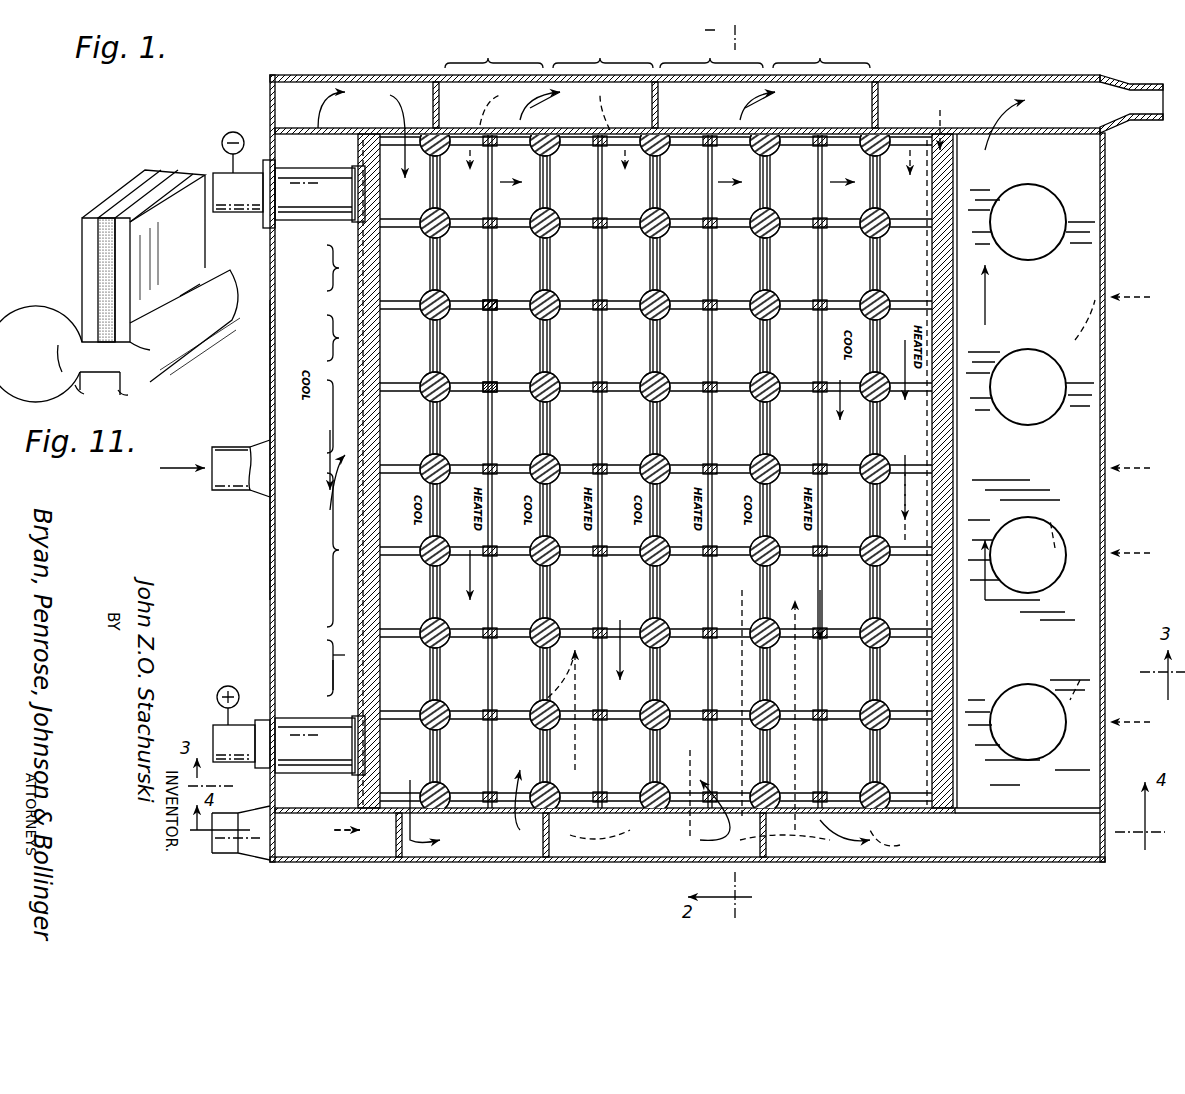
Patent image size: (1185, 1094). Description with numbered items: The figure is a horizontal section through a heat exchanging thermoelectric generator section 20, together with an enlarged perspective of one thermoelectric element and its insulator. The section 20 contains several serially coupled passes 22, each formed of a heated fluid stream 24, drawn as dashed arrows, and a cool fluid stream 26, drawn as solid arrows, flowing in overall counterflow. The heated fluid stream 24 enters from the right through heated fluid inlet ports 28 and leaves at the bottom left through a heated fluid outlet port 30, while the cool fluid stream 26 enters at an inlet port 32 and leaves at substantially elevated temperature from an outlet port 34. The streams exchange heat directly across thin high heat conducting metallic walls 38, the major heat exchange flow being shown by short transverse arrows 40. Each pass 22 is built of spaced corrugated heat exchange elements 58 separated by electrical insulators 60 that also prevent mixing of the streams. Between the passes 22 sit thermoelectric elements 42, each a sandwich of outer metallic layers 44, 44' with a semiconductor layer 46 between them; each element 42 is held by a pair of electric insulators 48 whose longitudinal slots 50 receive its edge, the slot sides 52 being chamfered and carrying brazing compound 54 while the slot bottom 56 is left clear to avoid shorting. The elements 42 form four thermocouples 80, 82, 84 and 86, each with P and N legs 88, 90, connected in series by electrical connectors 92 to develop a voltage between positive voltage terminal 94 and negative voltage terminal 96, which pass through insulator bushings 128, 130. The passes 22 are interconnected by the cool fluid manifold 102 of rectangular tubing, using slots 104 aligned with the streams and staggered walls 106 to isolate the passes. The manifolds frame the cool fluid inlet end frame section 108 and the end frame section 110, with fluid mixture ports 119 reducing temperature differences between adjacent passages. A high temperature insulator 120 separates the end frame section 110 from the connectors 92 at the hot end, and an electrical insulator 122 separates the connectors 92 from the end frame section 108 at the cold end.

In FIG. 1, the heat exchanging thermoelectric generator section 20 is at (318, 72).
In FIG. 1, the heated and cool fluid stream pass 22 is at (488, 58).
In FIG. 1, the heated fluid stream 24 is at (928, 112).
In FIG. 1, the cool fluid stream 26 is at (995, 140).
In FIG. 1, the heated fluid inlet port 28 is at (1105, 220).
In FIG. 1, the heated fluid outlet port 30 is at (212, 850).
In FIG. 1, the cool fluid inlet port 32 is at (212, 482).
In FIG. 1, the cool fluid outlet port 34 is at (1152, 84).
In FIG. 1, the high heat conducting metallic wall 38 is at (494, 197).
In FIG. 1, the transverse heat exchange arrow 40 is at (483, 180).
In FIG. 1, the thermoelectric element 42 is at (441, 255).
In FIG. 11, the thermoelectric element 42 is at (110, 192).
In FIG. 11, the outer metallic layer 44 is at (85, 263).
In FIG. 11, the outer metallic layer 44' is at (158, 258).
In FIG. 11, the semiconductor layer 46 is at (178, 175).
In FIG. 1, the electric insulator 48 is at (550, 250).
In FIG. 11, the electric insulator 48 is at (196, 336).
In FIG. 11, the longitudinal slot 50 is at (103, 385).
In FIG. 11, the slot side 52 is at (76, 386).
In FIG. 11, the brazing compound 54 is at (196, 280).
In FIG. 11, the slot bottom 56 is at (68, 355).
In FIG. 1, the heat exchange element 58 is at (475, 112).
In FIG. 1, the electrical insulator 60 is at (493, 320).
In FIG. 1, the thermocouple 80 is at (316, 268).
In FIG. 1, the thermocouple 82 is at (325, 340).
In FIG. 1, the thermocouple 84 is at (337, 552).
In FIG. 1, the thermocouple 86 is at (333, 660).
In FIG. 1, the thermocouple leg 88 is at (355, 601).
In FIG. 1, the thermocouple leg 90 is at (355, 522).
In FIG. 1, the electrical connector 92 is at (355, 302).
In FIG. 1, the positive voltage terminal 94 is at (215, 725).
In FIG. 1, the negative voltage terminal 96 is at (255, 215).
In FIG. 1, the cool fluid stream manifold 102 is at (405, 78).
In FIG. 1, the manifold slot 104 is at (780, 115).
In FIG. 1, the manifold wall 106 is at (672, 105).
In FIG. 1, the cool fluid inlet end frame section 108 is at (270, 575).
In FIG. 1, the end frame section 110 is at (1107, 745).
In FIG. 1, the fluid mixture port 119 is at (1045, 405).
In FIG. 1, the high temperature insulator 120 is at (948, 440).
In FIG. 1, the electrical insulator 122 is at (357, 630).
In FIG. 1, the insulator bushing 128 is at (330, 225).
In FIG. 1, the insulator bushing 130 is at (345, 170).